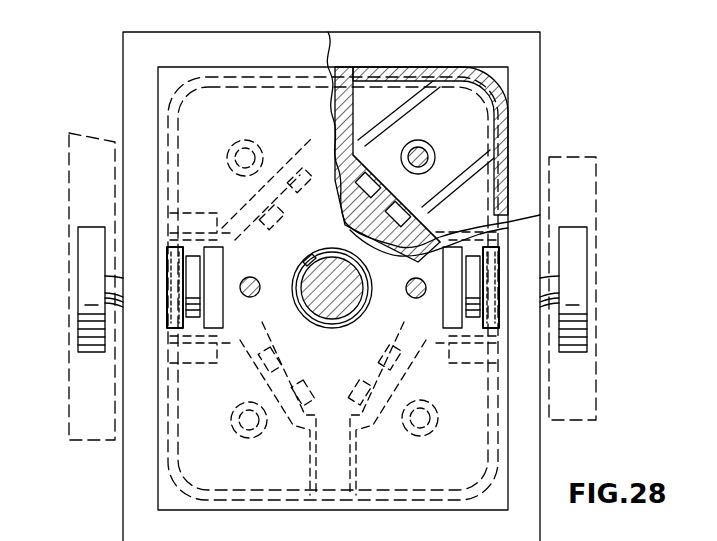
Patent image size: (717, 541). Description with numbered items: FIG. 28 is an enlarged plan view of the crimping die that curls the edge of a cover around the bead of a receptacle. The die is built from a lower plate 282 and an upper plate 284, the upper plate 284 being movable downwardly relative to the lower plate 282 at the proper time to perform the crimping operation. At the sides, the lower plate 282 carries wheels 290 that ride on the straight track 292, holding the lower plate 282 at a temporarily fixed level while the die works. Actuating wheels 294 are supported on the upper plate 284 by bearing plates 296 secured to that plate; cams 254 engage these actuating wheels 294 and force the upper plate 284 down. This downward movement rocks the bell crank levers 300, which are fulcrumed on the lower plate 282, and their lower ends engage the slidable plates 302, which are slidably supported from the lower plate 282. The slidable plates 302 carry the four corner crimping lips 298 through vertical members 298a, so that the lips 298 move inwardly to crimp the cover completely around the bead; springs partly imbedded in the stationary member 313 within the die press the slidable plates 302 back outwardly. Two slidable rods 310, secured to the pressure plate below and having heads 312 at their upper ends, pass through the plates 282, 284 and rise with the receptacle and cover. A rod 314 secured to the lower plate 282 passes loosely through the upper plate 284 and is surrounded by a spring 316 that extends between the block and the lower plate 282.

The cam 254 is at (215, 203).
The lower plate 282 is at (541, 118).
The upper plate 284 is at (182, 67).
The wheels 290 is at (85, 260).
The straight track 292 is at (70, 178).
The actuating wheels 294 is at (195, 268).
The bearing plates 296 is at (213, 313).
The corner crimping lips 298 is at (470, 158).
The vertical members 298a is at (506, 157).
The bell crank levers 300 is at (250, 146).
The slidable plates 302 is at (160, 118).
The slidable rods 310 is at (252, 296).
The heads 312 is at (362, 168).
The stationary member 313 is at (350, 118).
The rod 314 is at (342, 316).
The spring 316 is at (307, 256).